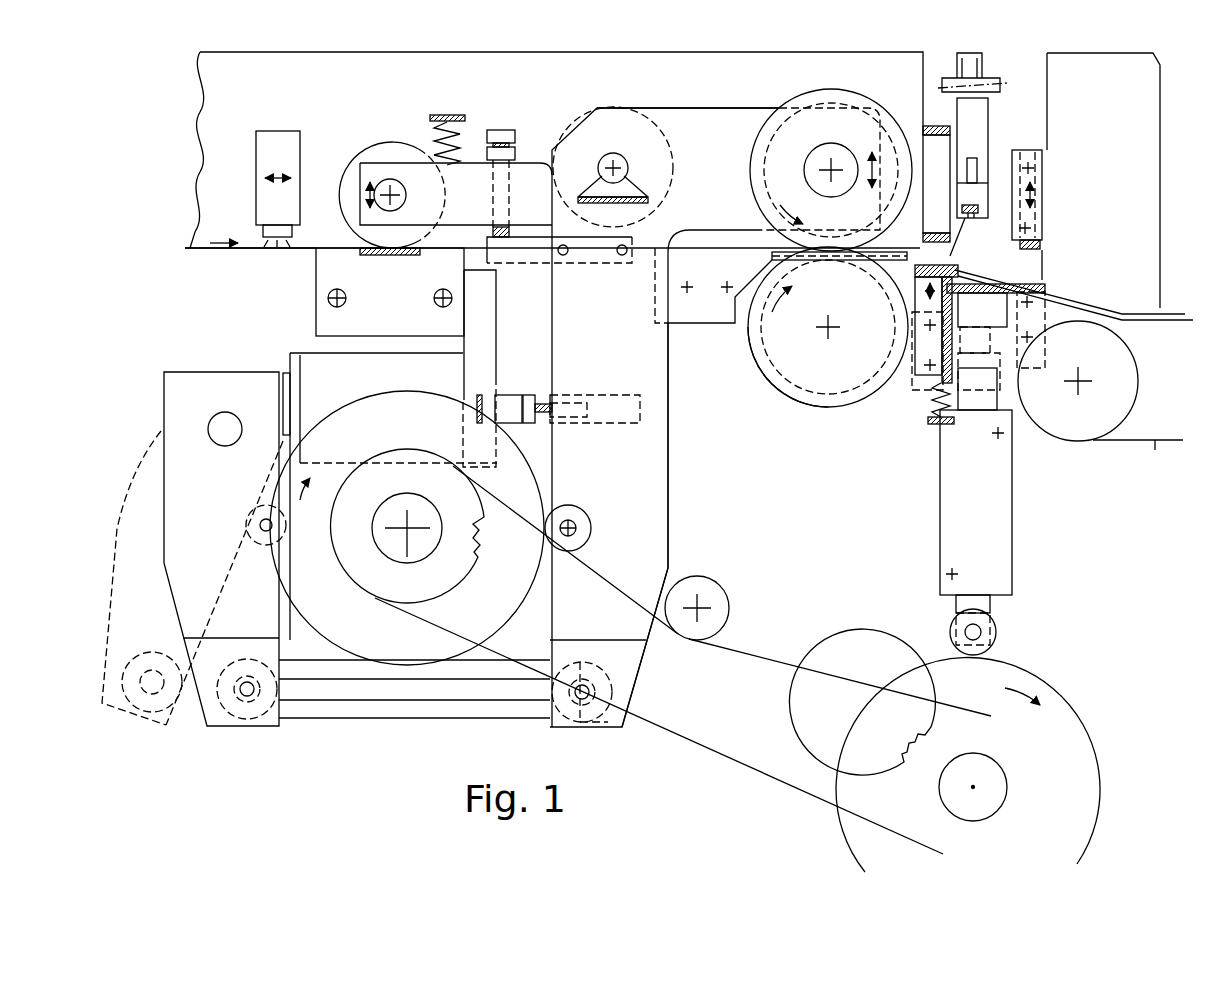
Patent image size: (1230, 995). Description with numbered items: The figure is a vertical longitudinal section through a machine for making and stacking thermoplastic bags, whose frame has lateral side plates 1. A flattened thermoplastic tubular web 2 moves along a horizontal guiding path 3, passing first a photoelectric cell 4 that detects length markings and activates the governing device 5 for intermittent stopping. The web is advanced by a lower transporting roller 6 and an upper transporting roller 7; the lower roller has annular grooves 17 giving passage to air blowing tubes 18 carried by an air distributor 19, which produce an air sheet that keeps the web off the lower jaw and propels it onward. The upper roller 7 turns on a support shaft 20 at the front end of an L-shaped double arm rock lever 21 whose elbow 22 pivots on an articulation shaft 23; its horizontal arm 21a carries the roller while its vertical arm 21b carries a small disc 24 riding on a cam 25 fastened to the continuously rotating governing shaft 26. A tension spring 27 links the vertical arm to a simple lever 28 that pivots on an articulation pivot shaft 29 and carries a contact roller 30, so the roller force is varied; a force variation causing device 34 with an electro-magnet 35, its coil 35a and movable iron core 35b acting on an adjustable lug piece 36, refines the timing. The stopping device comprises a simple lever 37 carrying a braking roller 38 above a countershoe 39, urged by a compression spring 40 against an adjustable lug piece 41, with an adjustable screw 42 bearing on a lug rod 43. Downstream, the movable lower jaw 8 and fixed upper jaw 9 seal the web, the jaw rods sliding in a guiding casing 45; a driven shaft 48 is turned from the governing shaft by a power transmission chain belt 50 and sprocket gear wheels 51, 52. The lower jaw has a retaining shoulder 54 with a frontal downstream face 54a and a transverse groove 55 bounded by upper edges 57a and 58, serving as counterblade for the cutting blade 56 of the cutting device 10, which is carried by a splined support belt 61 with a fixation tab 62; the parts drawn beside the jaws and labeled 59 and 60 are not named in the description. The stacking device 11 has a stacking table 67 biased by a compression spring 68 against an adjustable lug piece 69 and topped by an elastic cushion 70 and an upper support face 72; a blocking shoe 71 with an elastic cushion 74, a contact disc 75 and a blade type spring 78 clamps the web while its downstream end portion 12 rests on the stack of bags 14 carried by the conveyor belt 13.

The lateral side plates 1 is at (1152, 260).
The thermoplastic tubular web 2 is at (311, 248).
The guiding path 3 is at (306, 250).
The photoelectric cell 4 is at (278, 131).
The governing device 5 is at (439, 189).
The lower transporting roller 6 is at (810, 387).
The upper transporting roller 7 is at (851, 106).
The lower jaw 8 is at (907, 302).
The upper jaw 9 is at (943, 196).
The cutting device 10 is at (988, 131).
The stacking device 11 is at (1052, 226).
The downstream end portion 12 is at (1166, 323).
The conveyor belt 13 is at (1118, 325).
The stack of bags 14 is at (1093, 310).
The annular grooves 17 is at (753, 370).
The air blowing tubes 18 is at (872, 266).
The air distributor 19 is at (708, 322).
The support shaft 20 is at (808, 166).
The double arm rock lever 21 is at (672, 106).
The horizontal arm 21a is at (730, 116).
The vertical arm 21b is at (668, 522).
The elbow 22 is at (600, 106).
The articulation shaft 23 is at (622, 160).
The small disc 24 is at (590, 518).
The cam 25 is at (372, 638).
The governing shaft 26 is at (432, 515).
The tension spring 27 is at (432, 718).
The simple lever 28 is at (194, 556).
The articulation pivot shaft 29 is at (236, 424).
The contact roller 30 is at (247, 530).
The force variation causing device 34 is at (506, 352).
The electro-magnet 35 is at (411, 478).
The coil 35a is at (388, 382).
The movable iron core 35b is at (516, 393).
The adjustable lug piece 36 is at (540, 396).
The simple lever 37 is at (476, 165).
The braking roller 38 is at (362, 172).
The countershoe 39 is at (388, 256).
The compression spring 40 is at (441, 167).
The adjustable lug piece 41 is at (448, 120).
The adjustable screw 42 is at (515, 146).
The lug rod 43 is at (543, 263).
The guiding casing 45 is at (1012, 549).
The driven shaft 48 is at (975, 822).
The power transmission chain belt 50 is at (705, 756).
The sprocket gear wheel 51 is at (448, 594).
The sprocket gear wheel 52 is at (906, 803).
The retaining shoulder 54 is at (986, 282).
The frontal downstream face 54a is at (1040, 285).
The transverse groove 55 is at (945, 262).
The cutting blade 56 is at (948, 236).
The upper edge 57a is at (953, 262).
The upper edge 58 is at (916, 272).
The piston 59 is at (915, 292).
The guide 60 is at (940, 262).
The splined support belt 61 is at (978, 206).
The oblique fixation tab 62 is at (980, 220).
The stacking table 67 is at (1040, 318).
The compression spring 68 is at (928, 409).
The adjustable lug piece 69 is at (932, 425).
The elastic cushion 70 is at (982, 312).
The blocking shoe 71 is at (1042, 178).
The upper support face 72 is at (979, 358).
The elastic cushion 74 is at (990, 412).
The contact disc 75 is at (950, 632).
The blade type spring 78 is at (1042, 245).